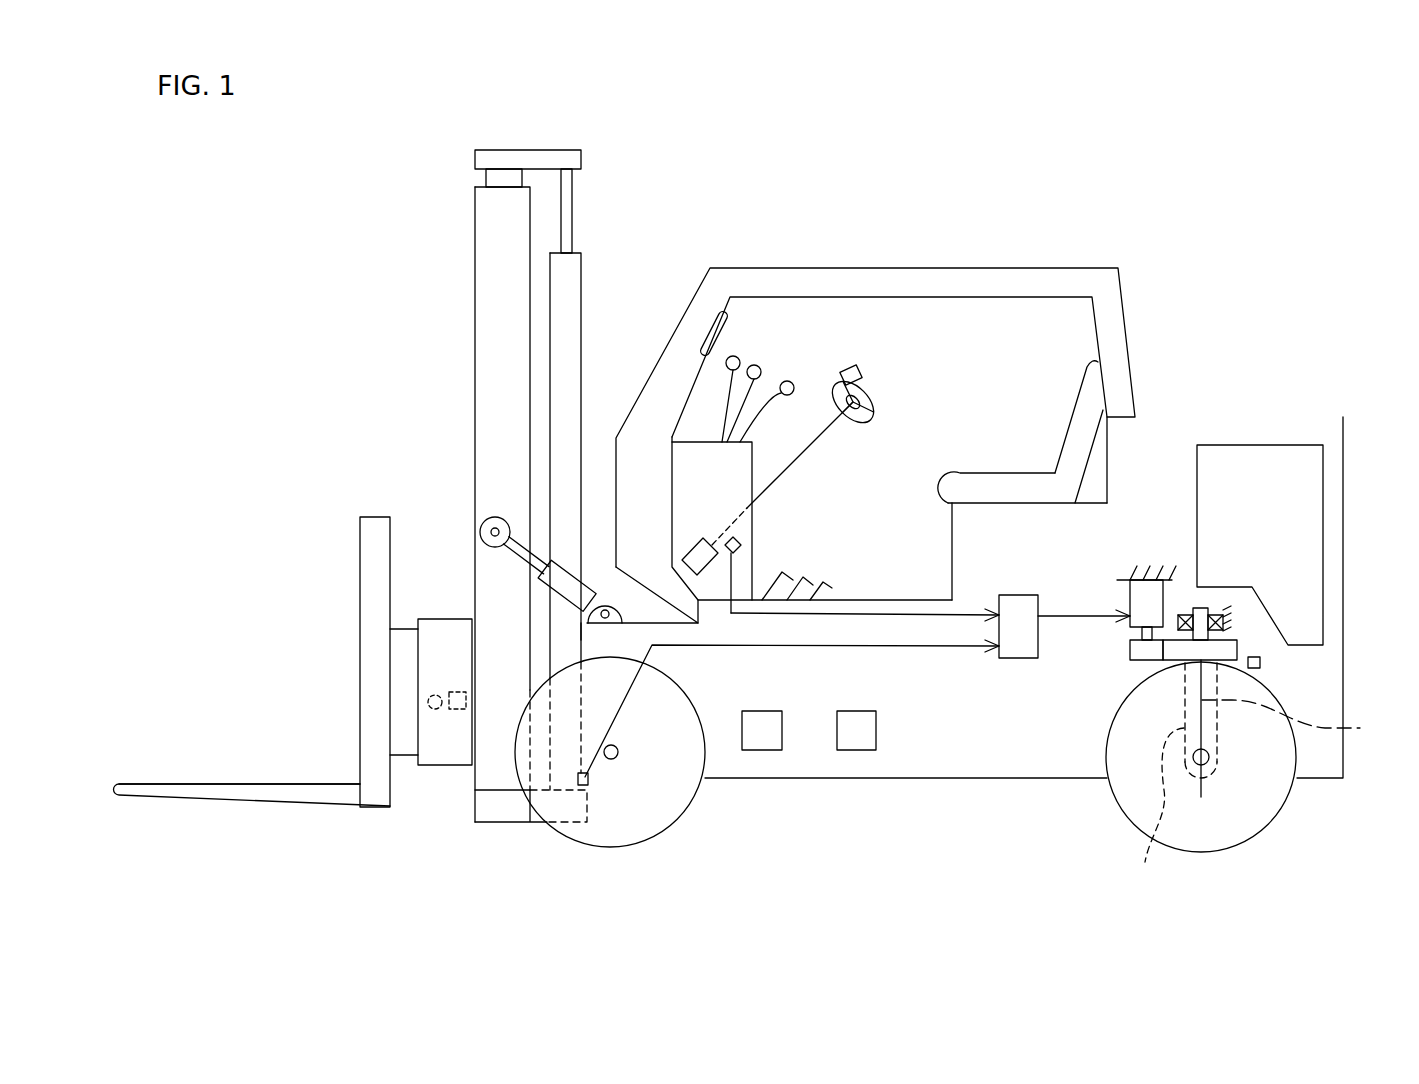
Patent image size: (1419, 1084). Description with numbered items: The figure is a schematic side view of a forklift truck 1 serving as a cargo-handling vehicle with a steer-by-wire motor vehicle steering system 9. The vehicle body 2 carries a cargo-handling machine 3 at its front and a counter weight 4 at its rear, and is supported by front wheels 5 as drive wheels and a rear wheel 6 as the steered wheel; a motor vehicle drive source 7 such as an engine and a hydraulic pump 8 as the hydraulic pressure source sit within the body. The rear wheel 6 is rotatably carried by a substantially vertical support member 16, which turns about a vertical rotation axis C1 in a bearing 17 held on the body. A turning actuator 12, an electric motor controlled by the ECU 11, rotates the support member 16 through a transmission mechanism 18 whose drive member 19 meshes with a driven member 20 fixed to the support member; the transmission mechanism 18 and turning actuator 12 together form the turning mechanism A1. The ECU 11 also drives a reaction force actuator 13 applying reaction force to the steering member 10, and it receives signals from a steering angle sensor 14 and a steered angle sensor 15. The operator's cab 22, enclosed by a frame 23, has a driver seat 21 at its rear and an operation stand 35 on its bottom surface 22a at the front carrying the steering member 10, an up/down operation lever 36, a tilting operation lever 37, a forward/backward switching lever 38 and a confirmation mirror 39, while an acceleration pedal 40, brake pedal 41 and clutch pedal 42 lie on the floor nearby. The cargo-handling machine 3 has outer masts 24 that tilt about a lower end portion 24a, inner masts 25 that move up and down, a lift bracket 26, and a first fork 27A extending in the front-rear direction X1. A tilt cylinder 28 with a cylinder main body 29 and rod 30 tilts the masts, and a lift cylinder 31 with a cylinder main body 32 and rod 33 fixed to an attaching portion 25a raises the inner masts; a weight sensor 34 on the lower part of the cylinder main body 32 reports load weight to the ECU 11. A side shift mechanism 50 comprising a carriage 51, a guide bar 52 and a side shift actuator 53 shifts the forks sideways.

The forklift truck 1 is at (1150, 319).
The vehicle body 2 is at (1032, 765).
The cargo-handling machine 3 is at (473, 352).
The counter weight 4 is at (1307, 490).
The front wheels 5 is at (650, 822).
The rear wheel 6 is at (1242, 827).
The motor vehicle drive source 7 is at (855, 743).
The hydraulic pump 8 is at (760, 740).
The motor vehicle steering system 9 is at (872, 387).
The steering member 10 is at (867, 427).
The ECU 11 is at (1018, 602).
The turning actuator 12 is at (1130, 595).
The reaction force actuator 13 is at (700, 548).
The steering angle sensor 14 is at (732, 537).
The steered angle sensor 15 is at (1260, 662).
The support member 16 is at (1157, 810).
The bearing 17 is at (1213, 613).
The transmission mechanism 18 is at (1142, 662).
The drive member 19 is at (1130, 651).
The driven member 20 is at (1232, 650).
The driver seat 21 is at (1007, 482).
The operator's cab 22 is at (970, 315).
The bottom surface 22a is at (902, 598).
The frame 23 is at (843, 280).
The outer masts 24 is at (485, 407).
The lower end portion 24a is at (510, 810).
The inner masts 25 is at (492, 178).
The attaching portion 25a is at (540, 160).
The lift bracket 26 is at (402, 673).
The first fork 27A is at (208, 790).
The tilt cylinder 28 is at (590, 583).
The cylinder main body 29 is at (566, 607).
The rod 30 is at (530, 568).
The lift cylinder 31 is at (548, 470).
The cylinder main body 32 is at (560, 277).
The rod 33 is at (561, 223).
The weight sensor 34 is at (590, 778).
The operation stand 35 is at (692, 442).
The up/down operation lever 36 is at (733, 356).
The tilting operation lever 37 is at (759, 366).
The forward/backward switching lever 38 is at (788, 396).
The confirmation mirror 39 is at (708, 338).
The acceleration pedal 40 is at (782, 572).
The brake pedal 41 is at (803, 575).
The clutch pedal 42 is at (823, 582).
The side shift mechanism 50 is at (482, 882).
The carriage 51 is at (461, 769).
The guide bar 52 is at (457, 709).
The side shift actuator 53 is at (435, 709).
The turning mechanism A1 is at (1173, 607).
The rotation axis C1 is at (1300, 723).
The front-rear direction X1 is at (262, 624).